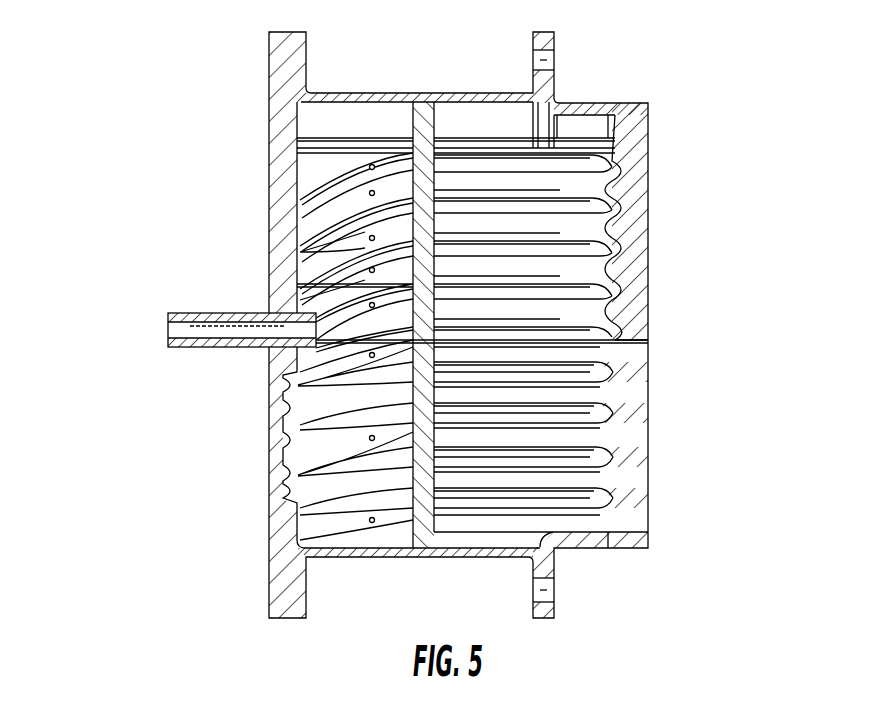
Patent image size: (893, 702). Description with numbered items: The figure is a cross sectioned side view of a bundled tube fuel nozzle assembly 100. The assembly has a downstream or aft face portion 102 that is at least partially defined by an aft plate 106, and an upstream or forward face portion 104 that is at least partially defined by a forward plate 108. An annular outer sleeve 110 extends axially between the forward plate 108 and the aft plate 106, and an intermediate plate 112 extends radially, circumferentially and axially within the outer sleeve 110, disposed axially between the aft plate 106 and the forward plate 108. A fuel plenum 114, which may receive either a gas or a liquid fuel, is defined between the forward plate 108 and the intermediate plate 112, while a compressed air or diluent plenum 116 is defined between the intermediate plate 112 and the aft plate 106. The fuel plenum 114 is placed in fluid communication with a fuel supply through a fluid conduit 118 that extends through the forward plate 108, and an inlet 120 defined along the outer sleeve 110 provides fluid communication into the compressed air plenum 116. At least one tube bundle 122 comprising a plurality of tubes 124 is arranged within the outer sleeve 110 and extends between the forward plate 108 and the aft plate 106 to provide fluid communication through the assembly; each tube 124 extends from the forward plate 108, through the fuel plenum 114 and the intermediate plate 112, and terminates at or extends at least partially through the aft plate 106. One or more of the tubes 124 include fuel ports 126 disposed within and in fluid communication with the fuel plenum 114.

The fuel nozzle assembly 100 is at (656, 60).
The aft face portion 102 is at (458, 311).
The forward face portion 104 is at (233, 311).
The aft plate 106 is at (630, 110).
The forward plate 108 is at (286, 32).
The annular outer sleeve 110 is at (331, 93).
The intermediate plate 112 is at (423, 117).
The fuel plenum 114 is at (373, 134).
The compressed air plenum 116 is at (496, 134).
The fluid conduit 118 is at (200, 312).
The inlet 120 is at (476, 98).
The tube bundle 122 is at (316, 175).
The tube 124 is at (322, 228).
The fuel port 126 is at (372, 236).